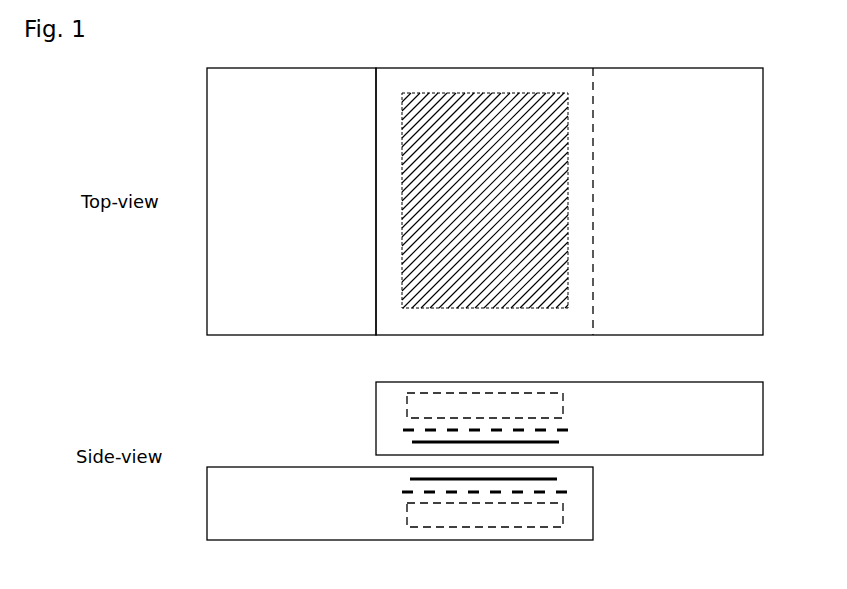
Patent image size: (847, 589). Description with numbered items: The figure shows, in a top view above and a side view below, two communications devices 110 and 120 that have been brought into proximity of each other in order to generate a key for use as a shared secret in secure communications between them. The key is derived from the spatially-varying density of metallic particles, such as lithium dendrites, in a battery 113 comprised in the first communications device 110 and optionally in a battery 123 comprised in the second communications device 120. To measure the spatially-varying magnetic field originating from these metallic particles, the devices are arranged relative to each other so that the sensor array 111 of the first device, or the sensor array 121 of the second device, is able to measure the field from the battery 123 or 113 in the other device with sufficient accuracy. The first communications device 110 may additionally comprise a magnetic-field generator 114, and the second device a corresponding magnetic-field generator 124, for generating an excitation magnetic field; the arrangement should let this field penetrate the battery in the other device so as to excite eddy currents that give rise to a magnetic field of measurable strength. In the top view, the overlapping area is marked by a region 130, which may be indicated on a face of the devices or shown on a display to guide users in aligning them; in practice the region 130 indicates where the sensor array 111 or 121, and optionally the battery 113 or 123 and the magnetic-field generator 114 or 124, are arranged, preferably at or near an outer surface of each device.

The first communications device 110 is at (740, 68).
The sensor array 111 is at (412, 442).
The battery 113 is at (407, 393).
The magnetic-field generator 114 is at (404, 430).
The second communications device 120 is at (230, 68).
The sensor array 121 is at (557, 479).
The battery 123 is at (560, 527).
The magnetic-field generator 124 is at (567, 492).
The region 130 is at (423, 93).